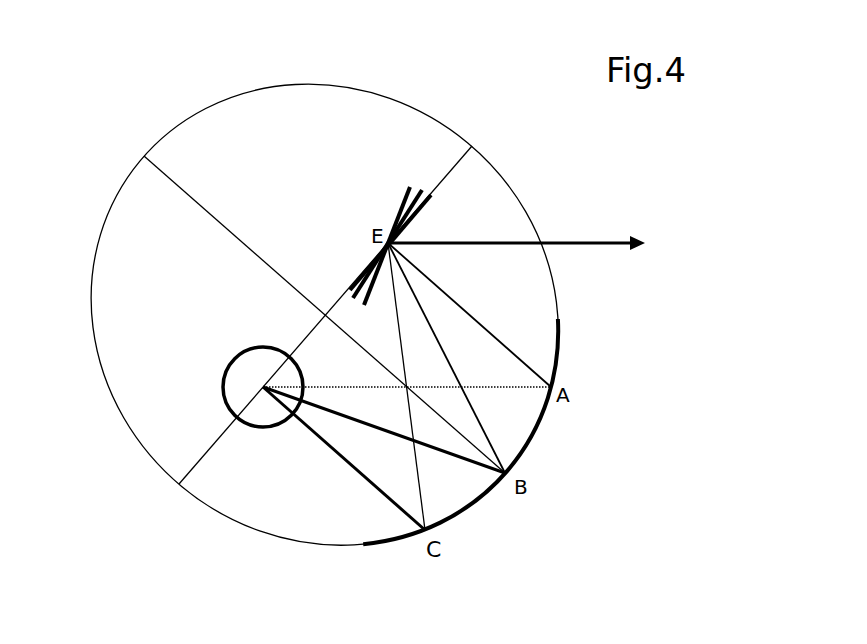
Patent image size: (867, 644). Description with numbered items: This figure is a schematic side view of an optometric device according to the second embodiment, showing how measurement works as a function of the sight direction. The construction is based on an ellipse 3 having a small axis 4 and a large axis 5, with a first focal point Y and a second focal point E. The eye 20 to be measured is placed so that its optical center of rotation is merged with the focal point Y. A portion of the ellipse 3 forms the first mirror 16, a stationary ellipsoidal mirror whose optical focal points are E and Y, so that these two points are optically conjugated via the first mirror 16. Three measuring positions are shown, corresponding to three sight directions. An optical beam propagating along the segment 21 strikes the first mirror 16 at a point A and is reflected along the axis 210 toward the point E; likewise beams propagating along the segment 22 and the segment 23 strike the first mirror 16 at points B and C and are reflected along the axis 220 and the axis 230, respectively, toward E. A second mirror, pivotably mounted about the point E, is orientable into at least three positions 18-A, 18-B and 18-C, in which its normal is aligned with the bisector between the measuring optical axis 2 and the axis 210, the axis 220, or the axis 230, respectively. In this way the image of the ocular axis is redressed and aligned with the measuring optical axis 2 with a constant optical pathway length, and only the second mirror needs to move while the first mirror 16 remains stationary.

The measuring optical axis 2 is at (562, 242).
The ellipse 3 is at (211, 106).
The small axis 4 is at (158, 168).
The large axis 5 is at (352, 292).
The first mirror 16 is at (394, 540).
The position of second mirror 18-A is at (400, 184).
The position of second mirror 18-B is at (420, 189).
The position of second mirror 18-C is at (434, 196).
The eye 20 is at (222, 388).
The segment 21 is at (324, 385).
The segment 22 is at (330, 412).
The segment 23 is at (347, 462).
The axis 210 is at (454, 300).
The axis 220 is at (444, 352).
The axis 230 is at (422, 483).